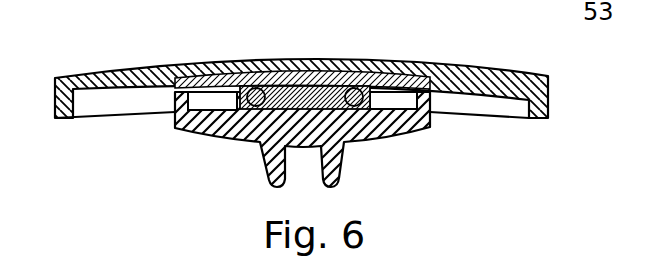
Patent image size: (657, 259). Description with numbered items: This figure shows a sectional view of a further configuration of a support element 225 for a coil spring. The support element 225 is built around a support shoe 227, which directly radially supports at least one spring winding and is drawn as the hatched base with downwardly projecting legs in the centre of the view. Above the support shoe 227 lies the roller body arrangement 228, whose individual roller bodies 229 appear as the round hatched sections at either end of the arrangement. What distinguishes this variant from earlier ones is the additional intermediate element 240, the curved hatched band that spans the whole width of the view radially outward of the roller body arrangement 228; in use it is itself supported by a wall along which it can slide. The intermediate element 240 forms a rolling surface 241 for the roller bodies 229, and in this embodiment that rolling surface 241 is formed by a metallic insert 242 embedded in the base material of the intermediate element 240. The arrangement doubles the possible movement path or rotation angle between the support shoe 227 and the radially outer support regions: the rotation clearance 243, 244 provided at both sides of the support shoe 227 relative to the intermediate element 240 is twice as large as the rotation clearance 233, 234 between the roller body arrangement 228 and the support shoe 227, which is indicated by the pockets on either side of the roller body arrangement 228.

The support element 225 is at (348, 121).
The support shoe 227 is at (233, 128).
The roller body arrangement 228 is at (308, 87).
The roller bodies 229 is at (252, 88).
The rotation clearance 233 is at (215, 99).
The rotation clearance 234 is at (408, 99).
The intermediate element 240 is at (550, 91).
The rolling surface 241 is at (452, 91).
The metallic insert 242 is at (418, 82).
The rotation clearance 243 is at (125, 100).
The rotation clearance 244 is at (503, 100).